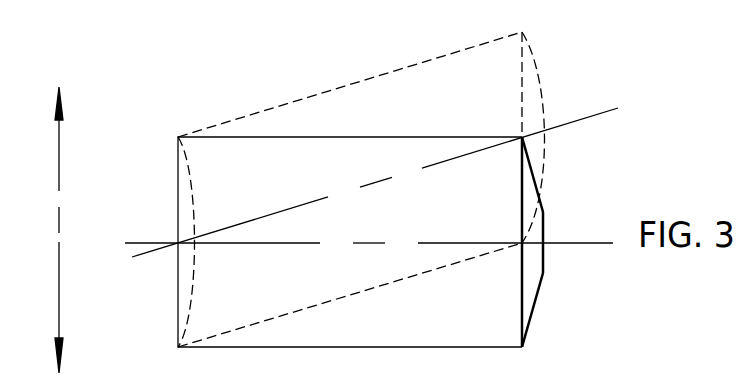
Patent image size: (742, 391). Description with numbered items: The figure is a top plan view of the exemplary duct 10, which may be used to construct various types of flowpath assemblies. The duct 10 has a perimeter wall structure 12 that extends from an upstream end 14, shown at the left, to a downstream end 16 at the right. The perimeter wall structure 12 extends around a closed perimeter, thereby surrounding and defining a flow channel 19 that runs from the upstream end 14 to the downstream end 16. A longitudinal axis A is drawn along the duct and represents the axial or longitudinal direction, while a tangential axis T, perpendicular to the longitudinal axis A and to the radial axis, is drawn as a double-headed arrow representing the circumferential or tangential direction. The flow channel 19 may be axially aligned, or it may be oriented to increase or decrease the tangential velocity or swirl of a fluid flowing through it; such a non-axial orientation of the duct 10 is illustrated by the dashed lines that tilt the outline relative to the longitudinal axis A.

The duct 10 is at (387, 211).
The perimeter wall structure 12 is at (479, 313).
The upstream end 14 is at (178, 320).
The downstream end 16 is at (577, 256).
The flow channel 19 is at (536, 283).
The tangential axis T is at (58, 206).
The longitudinal axis A is at (145, 243).